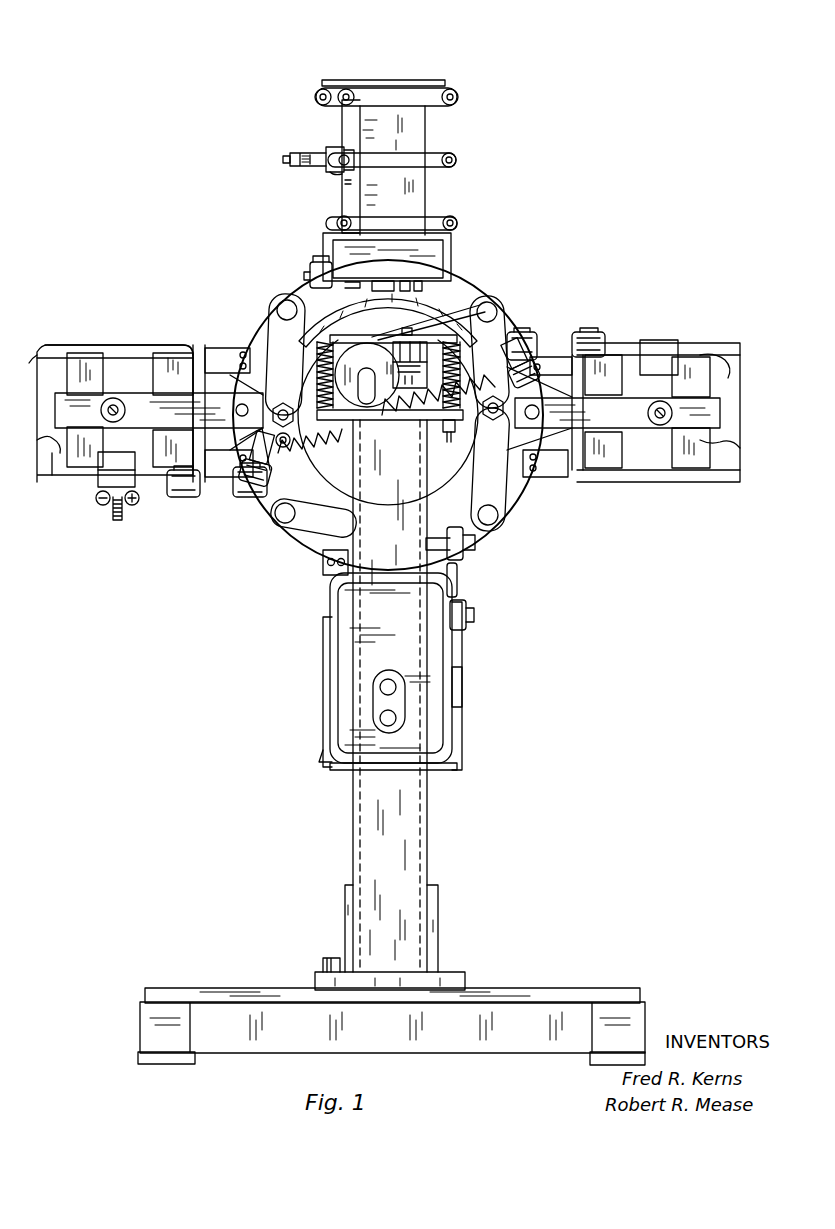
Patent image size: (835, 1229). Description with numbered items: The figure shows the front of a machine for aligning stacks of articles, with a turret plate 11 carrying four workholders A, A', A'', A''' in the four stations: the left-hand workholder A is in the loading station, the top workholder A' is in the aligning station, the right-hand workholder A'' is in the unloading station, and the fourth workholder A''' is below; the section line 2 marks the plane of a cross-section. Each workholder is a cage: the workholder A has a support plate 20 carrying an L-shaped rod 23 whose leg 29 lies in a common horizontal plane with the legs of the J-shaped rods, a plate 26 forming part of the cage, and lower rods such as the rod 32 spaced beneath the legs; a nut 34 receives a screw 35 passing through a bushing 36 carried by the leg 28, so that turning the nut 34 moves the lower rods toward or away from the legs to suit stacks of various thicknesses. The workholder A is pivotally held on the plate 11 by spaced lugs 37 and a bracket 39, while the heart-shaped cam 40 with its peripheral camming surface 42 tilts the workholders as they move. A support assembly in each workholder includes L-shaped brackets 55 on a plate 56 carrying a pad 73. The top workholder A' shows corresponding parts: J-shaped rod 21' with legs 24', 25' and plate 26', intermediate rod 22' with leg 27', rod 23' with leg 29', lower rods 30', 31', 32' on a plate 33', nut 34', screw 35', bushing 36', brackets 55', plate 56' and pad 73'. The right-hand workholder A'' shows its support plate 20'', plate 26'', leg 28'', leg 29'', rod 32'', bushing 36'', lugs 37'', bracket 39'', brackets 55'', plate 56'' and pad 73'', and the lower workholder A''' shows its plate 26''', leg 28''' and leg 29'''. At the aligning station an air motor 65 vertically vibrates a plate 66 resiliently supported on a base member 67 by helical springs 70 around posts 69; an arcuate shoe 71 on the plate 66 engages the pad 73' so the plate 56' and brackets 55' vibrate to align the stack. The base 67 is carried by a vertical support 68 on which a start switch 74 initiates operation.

The section line 2- 2 is at (385, 110).
The turret plate 11 is at (523, 540).
The support plate 20 is at (206, 334).
The support plate 20'' is at (586, 492).
The rod 21' is at (386, 107).
The intermediate rod 22' is at (392, 141).
The rod 23 is at (182, 402).
The rod 23' is at (392, 203).
The leg 24' is at (469, 102).
The leg 25' is at (307, 99).
The plate 26 is at (99, 413).
The plate 26' is at (383, 71).
The plate 26'' is at (681, 412).
The plate 26''' is at (484, 751).
The leg 27' is at (412, 161).
The leg 28 is at (182, 494).
The leg 28'' is at (606, 335).
The leg 28''' is at (481, 666).
The leg 29 is at (115, 341).
The leg 29' is at (411, 222).
The leg 29'' is at (658, 433).
The leg 29''' is at (307, 692).
The rod 30' is at (338, 107).
The intermediate rod 31' is at (332, 174).
The rod 32 is at (40, 494).
The rod 32' is at (318, 205).
The rod 32'' is at (728, 330).
The plate 33' is at (372, 177).
The nut 34 is at (146, 513).
The nut 34' is at (294, 150).
The screw 35 is at (101, 513).
The screw 35' is at (274, 165).
The bushing 36 is at (101, 479).
The bushing 36' is at (328, 148).
The bushing 36'' is at (664, 345).
The lugs 37 is at (357, 416).
The lugs 37'' is at (545, 413).
The bracket 39 is at (170, 410).
The bracket 39'' is at (598, 375).
The cam 40 is at (450, 505).
The peripheral camming surface 42 is at (316, 475).
The L-shaped brackets 55 is at (103, 410).
The L-shaped brackets 55' is at (407, 257).
The L-shaped brackets 55'' is at (647, 412).
The plate 56 is at (135, 411).
The plate 56' is at (349, 273).
The plate 56'' is at (646, 409).
The motor 65 is at (372, 420).
The plate 66 is at (372, 323).
The base member 67 is at (403, 420).
The support 68 is at (432, 472).
The posts 69 is at (330, 445).
The helical springs 70 is at (313, 357).
The arcuate shoe 71 is at (445, 292).
The pad 73 is at (126, 406).
The pad 73' is at (418, 274).
The pad 73'' is at (642, 412).
The start switch 74 is at (347, 604).
The workholder A is at (107, 332).
The workholder A' is at (427, 69).
The workholder A'' is at (649, 495).
The workholder A''' is at (483, 715).